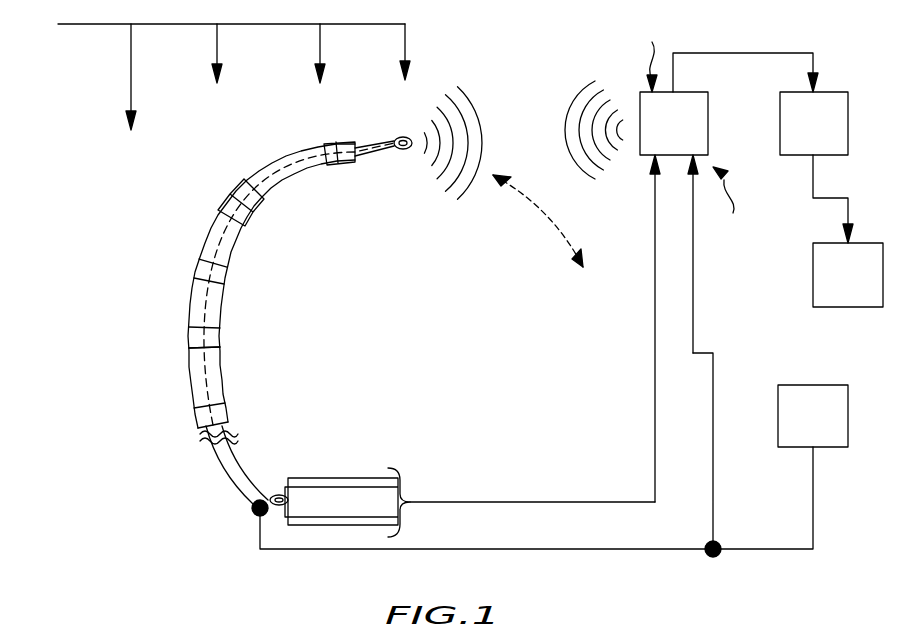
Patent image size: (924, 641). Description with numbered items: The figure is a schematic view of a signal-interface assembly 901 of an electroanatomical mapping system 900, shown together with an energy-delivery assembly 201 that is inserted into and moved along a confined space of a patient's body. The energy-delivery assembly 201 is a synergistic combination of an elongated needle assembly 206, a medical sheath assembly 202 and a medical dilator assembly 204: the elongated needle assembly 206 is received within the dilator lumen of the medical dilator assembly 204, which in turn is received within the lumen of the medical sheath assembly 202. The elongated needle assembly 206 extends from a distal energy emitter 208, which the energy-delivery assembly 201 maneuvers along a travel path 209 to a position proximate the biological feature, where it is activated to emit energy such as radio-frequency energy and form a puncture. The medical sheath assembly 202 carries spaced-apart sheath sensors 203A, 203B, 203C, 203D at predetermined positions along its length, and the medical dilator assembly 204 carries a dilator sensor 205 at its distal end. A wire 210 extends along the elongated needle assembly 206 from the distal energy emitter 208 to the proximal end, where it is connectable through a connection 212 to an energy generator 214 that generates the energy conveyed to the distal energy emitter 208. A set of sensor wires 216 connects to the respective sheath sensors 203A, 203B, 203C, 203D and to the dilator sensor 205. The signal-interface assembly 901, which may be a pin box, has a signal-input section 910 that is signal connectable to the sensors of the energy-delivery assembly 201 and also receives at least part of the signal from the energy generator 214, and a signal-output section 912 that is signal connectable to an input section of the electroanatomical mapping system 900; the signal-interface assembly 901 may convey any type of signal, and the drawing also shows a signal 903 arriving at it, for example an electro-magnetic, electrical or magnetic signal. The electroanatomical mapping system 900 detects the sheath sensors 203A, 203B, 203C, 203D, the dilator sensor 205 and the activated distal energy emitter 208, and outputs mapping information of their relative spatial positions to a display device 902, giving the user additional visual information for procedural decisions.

The energy-delivery assembly 201 is at (54, 37).
The medical sheath assembly 202 is at (214, 210).
The medical dilator assembly 204 is at (287, 153).
The elongated needle assembly 206 is at (377, 142).
The distal energy emitter 208 is at (403, 135).
The dilator sensor 205 is at (333, 166).
The sheath sensor 203A is at (246, 230).
The sheath sensor 203B is at (226, 268).
The sheath sensor 203C is at (221, 338).
The sheath sensor 203D is at (229, 412).
The wire 210 is at (205, 304).
The set of sensor wires 216 is at (250, 467).
The travel path 209 is at (545, 212).
The received signal 903 is at (569, 108).
The signal-output section 912 is at (652, 53).
The signal-interface assembly 901 is at (693, 137).
The electroanatomical mapping system 900 is at (832, 137).
The display device 902 is at (867, 289).
The signal-input section 910 is at (732, 206).
The energy generator 214 is at (832, 429).
The connection 212 is at (813, 490).